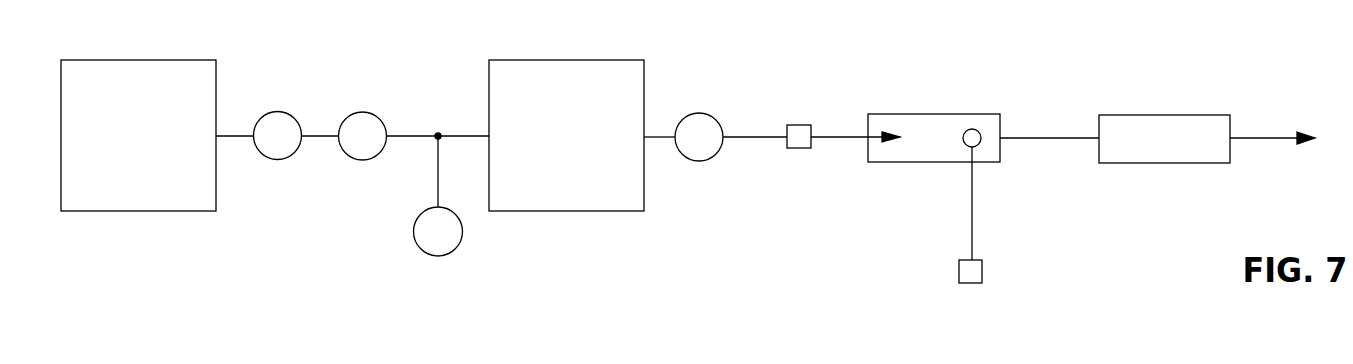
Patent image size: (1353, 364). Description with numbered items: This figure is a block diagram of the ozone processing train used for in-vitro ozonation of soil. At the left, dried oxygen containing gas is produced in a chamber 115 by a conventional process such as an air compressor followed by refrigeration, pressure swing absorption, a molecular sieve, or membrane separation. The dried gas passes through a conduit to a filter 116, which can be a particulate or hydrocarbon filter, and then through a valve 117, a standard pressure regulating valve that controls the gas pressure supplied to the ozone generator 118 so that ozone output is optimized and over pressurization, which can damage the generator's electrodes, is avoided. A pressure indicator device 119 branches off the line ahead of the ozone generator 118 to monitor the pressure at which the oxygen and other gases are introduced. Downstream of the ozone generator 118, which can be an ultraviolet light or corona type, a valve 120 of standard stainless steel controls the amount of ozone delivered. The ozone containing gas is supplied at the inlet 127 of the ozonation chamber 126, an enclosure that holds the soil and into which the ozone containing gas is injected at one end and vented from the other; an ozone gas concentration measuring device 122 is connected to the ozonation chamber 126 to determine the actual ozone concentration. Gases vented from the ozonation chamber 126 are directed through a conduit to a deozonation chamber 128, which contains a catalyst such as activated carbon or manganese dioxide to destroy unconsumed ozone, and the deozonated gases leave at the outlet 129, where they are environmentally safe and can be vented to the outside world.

The chamber 115 is at (126, 60).
The filter 116 is at (277, 160).
The valve 117 is at (362, 111).
The ozone generator 118 is at (577, 60).
The pressure indicator device 119 is at (422, 256).
The valve 120 is at (700, 113).
The ozone gas concentration measuring device 122 is at (957, 278).
The ozonation chamber 126 is at (945, 114).
The inlet 127 is at (828, 135).
The deozonation chamber 128 is at (1167, 115).
The outlet 129 is at (1270, 142).